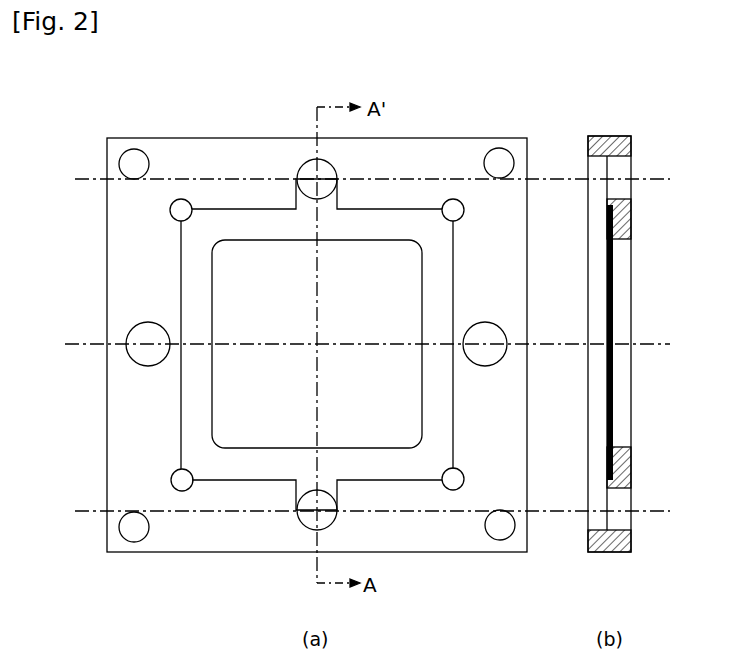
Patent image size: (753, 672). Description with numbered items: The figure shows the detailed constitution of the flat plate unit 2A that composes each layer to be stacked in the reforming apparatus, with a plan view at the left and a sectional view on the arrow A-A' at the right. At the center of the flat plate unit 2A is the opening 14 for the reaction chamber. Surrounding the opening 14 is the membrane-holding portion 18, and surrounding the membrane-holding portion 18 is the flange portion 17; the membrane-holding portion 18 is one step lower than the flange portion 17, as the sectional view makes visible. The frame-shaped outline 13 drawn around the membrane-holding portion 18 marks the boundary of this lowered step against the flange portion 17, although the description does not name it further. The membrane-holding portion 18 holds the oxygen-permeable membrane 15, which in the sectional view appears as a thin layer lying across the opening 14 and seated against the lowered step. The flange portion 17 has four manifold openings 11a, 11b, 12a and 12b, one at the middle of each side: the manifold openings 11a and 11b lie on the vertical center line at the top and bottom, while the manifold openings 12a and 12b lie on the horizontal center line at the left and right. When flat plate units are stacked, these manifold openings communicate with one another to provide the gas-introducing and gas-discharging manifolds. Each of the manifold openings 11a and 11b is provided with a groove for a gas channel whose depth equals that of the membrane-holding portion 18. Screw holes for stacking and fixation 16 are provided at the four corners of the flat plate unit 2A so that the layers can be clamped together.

The flat plate unit 2A is at (100, 466).
The manifold opening 11a is at (305, 163).
The manifold opening 11b is at (295, 490).
The manifold opening 12a is at (128, 338).
The manifold opening 12b is at (507, 340).
The frame-shaped electrode 13 is at (186, 248).
The opening 14 is at (420, 446).
The oxygen-permeable membrane 15 is at (613, 414).
The screw holes for stacking and fixation 16 is at (119, 161).
The flange portion 17 is at (182, 527).
The membrane-holding portion 18 is at (233, 495).